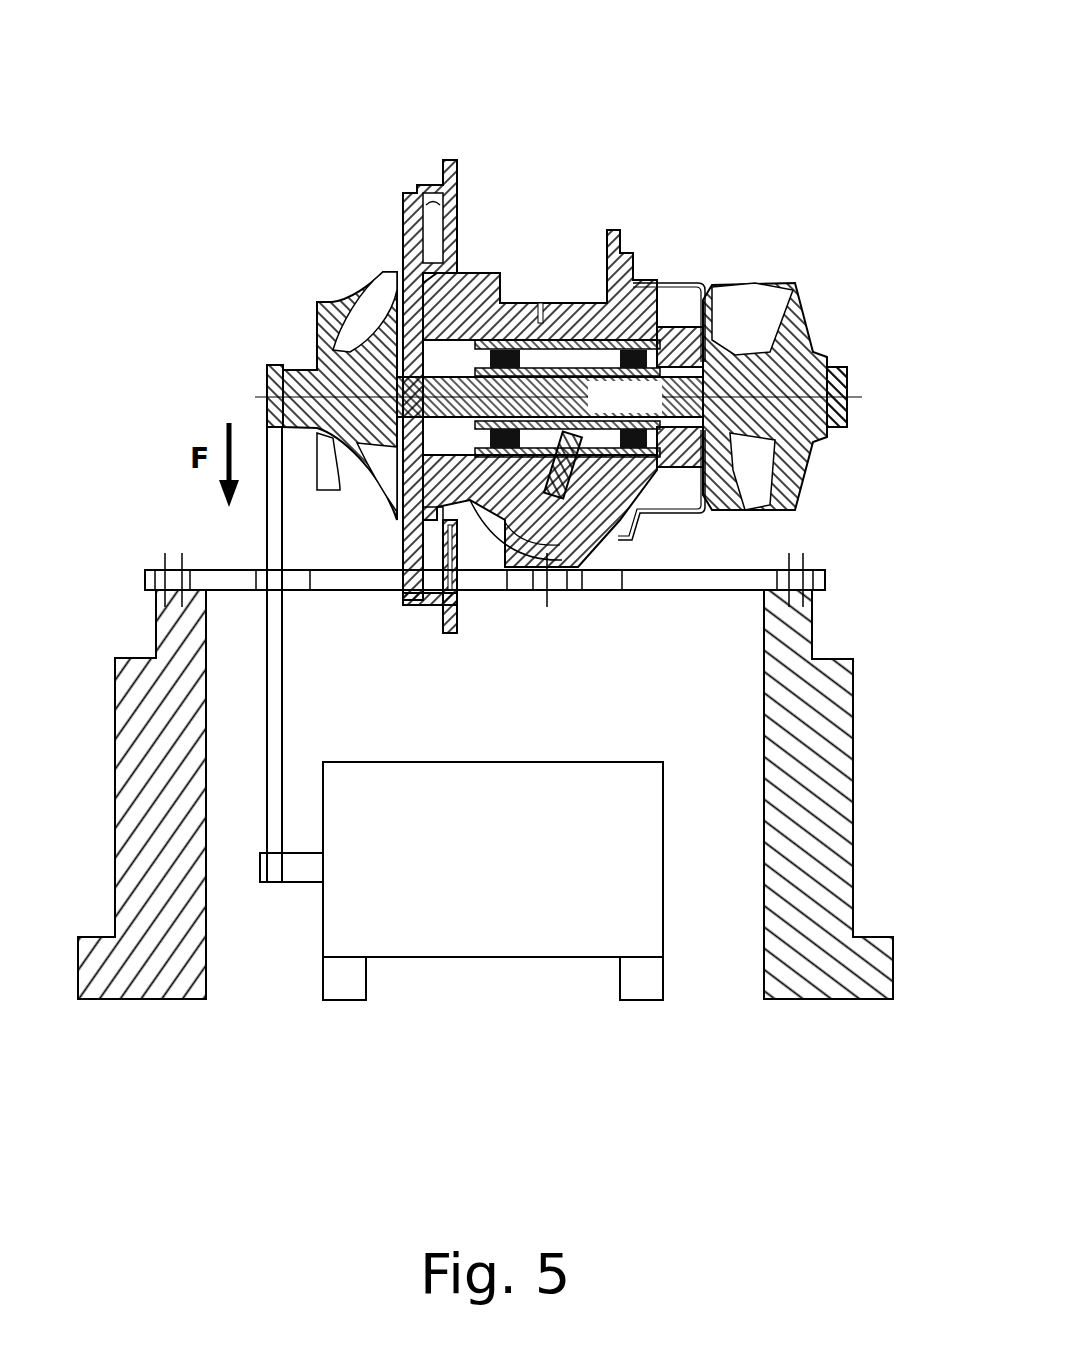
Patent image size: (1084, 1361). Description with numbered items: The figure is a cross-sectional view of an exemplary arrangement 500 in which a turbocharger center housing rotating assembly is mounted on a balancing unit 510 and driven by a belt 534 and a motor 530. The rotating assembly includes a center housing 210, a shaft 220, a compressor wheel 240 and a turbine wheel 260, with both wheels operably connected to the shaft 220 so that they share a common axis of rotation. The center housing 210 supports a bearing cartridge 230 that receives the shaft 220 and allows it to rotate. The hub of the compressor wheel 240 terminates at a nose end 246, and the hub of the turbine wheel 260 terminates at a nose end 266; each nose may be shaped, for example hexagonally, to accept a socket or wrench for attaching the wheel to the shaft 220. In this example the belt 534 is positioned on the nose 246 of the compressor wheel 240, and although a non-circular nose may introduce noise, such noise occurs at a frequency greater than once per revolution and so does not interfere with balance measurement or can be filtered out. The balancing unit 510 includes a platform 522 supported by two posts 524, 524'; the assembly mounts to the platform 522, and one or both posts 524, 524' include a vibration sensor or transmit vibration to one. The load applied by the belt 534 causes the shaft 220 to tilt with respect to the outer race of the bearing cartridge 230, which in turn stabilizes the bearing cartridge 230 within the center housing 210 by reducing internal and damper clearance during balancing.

The arrangement 500 is at (736, 50).
The compressor wheel 240 is at (326, 235).
The nose end 246 is at (267, 375).
The center housing 210 is at (498, 273).
The shaft 220 is at (638, 411).
The bearing cartridge 230 is at (645, 330).
The turbine wheel 260 is at (792, 240).
The nose end 266 is at (847, 380).
The balancing unit 510 is at (874, 527).
The platform 522 is at (230, 570).
The post 524 is at (135, 792).
The post 524' is at (838, 792).
The motor 530 is at (509, 873).
The belt 534 is at (282, 710).